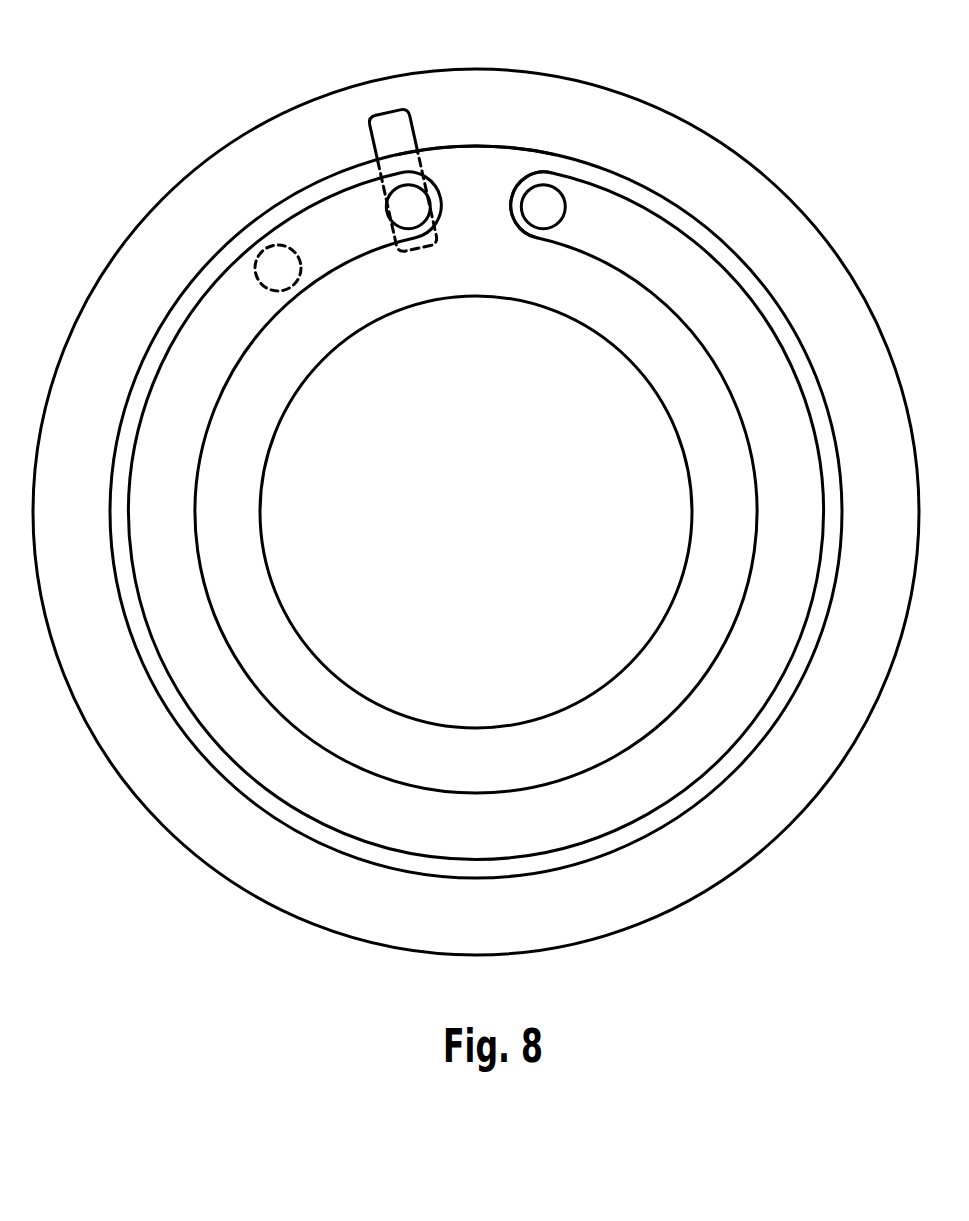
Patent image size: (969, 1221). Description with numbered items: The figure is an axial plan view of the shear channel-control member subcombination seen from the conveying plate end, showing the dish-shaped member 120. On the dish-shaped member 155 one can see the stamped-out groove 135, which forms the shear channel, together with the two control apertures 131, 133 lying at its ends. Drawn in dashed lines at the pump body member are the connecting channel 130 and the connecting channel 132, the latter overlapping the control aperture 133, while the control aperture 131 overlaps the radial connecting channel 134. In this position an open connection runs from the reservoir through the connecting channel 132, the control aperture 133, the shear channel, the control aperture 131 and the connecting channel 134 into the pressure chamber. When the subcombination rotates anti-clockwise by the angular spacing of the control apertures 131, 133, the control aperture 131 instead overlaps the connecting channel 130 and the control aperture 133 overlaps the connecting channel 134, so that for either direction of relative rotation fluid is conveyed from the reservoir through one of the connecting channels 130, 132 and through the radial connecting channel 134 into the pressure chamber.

The dish-shaped member 120 is at (458, 107).
The connecting channel 130 is at (257, 267).
The control aperture 131 is at (392, 212).
The connecting channel 132 is at (566, 197).
The control aperture 133 is at (547, 197).
The radial connecting channel 134 is at (390, 127).
The stamped-out groove 135 is at (678, 262).
The dish-shaped member 155 is at (493, 185).